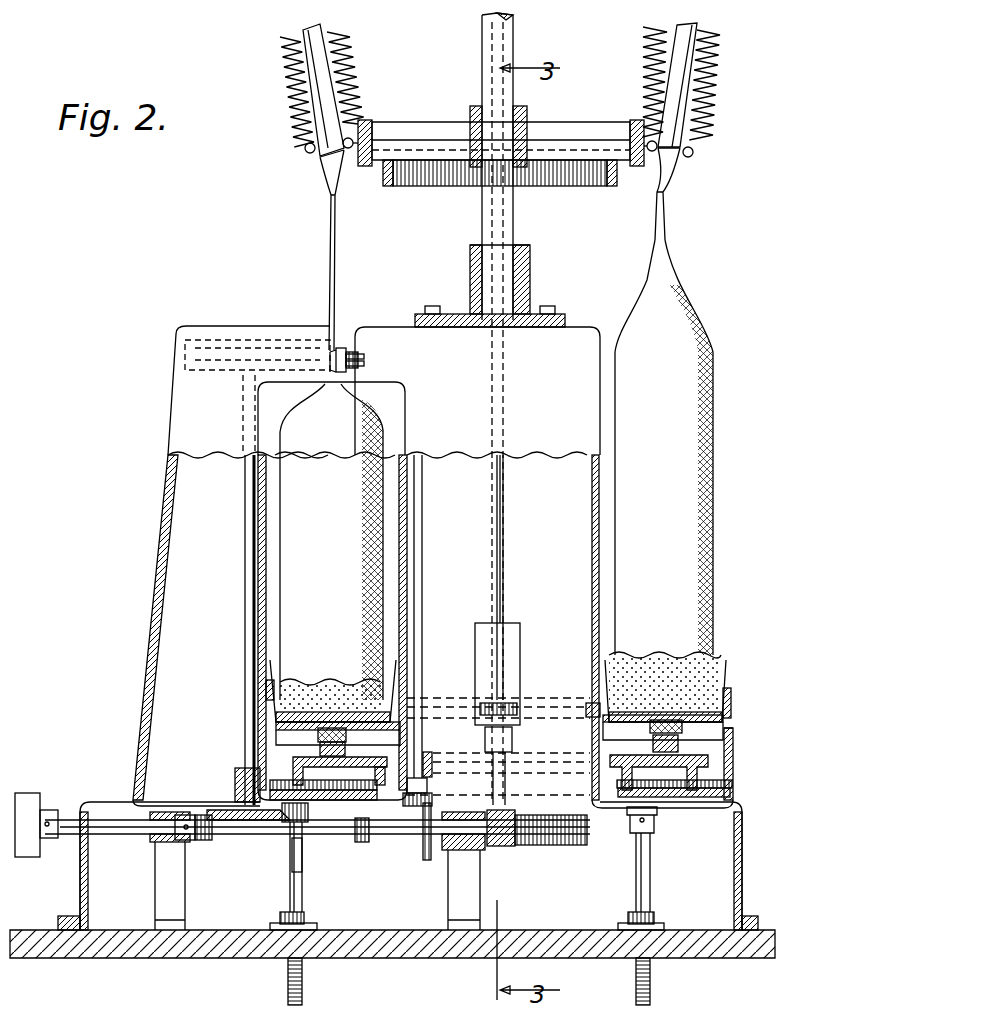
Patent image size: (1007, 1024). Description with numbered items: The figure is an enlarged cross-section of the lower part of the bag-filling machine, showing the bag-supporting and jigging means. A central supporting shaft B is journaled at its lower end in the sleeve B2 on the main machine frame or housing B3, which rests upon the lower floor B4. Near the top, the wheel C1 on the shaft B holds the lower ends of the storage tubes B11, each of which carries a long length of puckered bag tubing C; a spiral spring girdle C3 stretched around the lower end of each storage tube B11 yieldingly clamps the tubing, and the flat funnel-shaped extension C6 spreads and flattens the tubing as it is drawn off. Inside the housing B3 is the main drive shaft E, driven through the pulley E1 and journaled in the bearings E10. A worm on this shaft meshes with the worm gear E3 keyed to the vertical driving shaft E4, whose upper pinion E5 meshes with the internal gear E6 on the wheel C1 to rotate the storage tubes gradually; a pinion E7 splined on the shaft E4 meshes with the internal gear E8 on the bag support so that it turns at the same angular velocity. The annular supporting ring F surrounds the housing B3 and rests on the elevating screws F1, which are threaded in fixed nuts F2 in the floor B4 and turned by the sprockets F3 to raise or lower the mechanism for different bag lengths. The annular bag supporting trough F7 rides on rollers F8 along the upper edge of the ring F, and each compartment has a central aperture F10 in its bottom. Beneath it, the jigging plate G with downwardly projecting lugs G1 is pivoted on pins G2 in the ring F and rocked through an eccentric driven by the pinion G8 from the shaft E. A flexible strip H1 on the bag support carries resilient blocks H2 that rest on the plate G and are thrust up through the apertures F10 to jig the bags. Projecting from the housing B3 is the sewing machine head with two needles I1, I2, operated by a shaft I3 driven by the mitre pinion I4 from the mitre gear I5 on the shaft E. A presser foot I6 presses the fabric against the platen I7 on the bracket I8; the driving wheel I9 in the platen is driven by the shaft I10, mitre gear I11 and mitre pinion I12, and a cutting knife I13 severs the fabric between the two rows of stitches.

The central supporting shaft B is at (482, 44).
The storage tube B11 is at (310, 36).
The sleeve B2 is at (530, 268).
The main machine frame or housing B3 is at (742, 870).
The lower floor B4 is at (395, 960).
The bag tubing C is at (288, 88).
The wheel C1 is at (572, 130).
The spiral spring girdle C3 is at (305, 148).
The flat funnel-shaped extension C6 is at (330, 178).
The main drive shaft E is at (110, 834).
The pulley E1 is at (28, 793).
The worm gear E3 is at (540, 845).
The vertical driving shaft E4 is at (504, 510).
The pinion E5 is at (518, 170).
The internal gear E6 is at (578, 186).
The pinion E7 is at (508, 705).
The internal gear E8 is at (598, 712).
The bearings E10 is at (150, 842).
The annular supporting ring F is at (735, 748).
The elevating screws F1 is at (288, 993).
The fixed nuts F2 is at (306, 916).
The sprockets F3 is at (295, 840).
The annular bag supporting trough F7 is at (372, 668).
The rollers F8 is at (266, 686).
The aperture F10 is at (316, 720).
The jigging plate G is at (652, 797).
The downwardly projecting lugs G1 is at (318, 822).
The pins G2 is at (338, 800).
The pinion G8 is at (362, 842).
The flexible strip H1 is at (266, 735).
The resilient blocks H2 is at (318, 748).
The needle I1 is at (345, 362).
The needle I2 is at (340, 384).
The shaft I3 is at (423, 575).
The mitre pinion I4 is at (428, 790).
The mitre gear I5 is at (423, 858).
The presser foot I6 is at (338, 355).
The platen I7 is at (330, 357).
The bracket I8 is at (170, 435).
The driving wheel I9 is at (215, 345).
The shaft I10 is at (244, 568).
The mitre gear I11 is at (232, 812).
The mitre pinion I12 is at (205, 842).
The cutting knife I13 is at (365, 358).